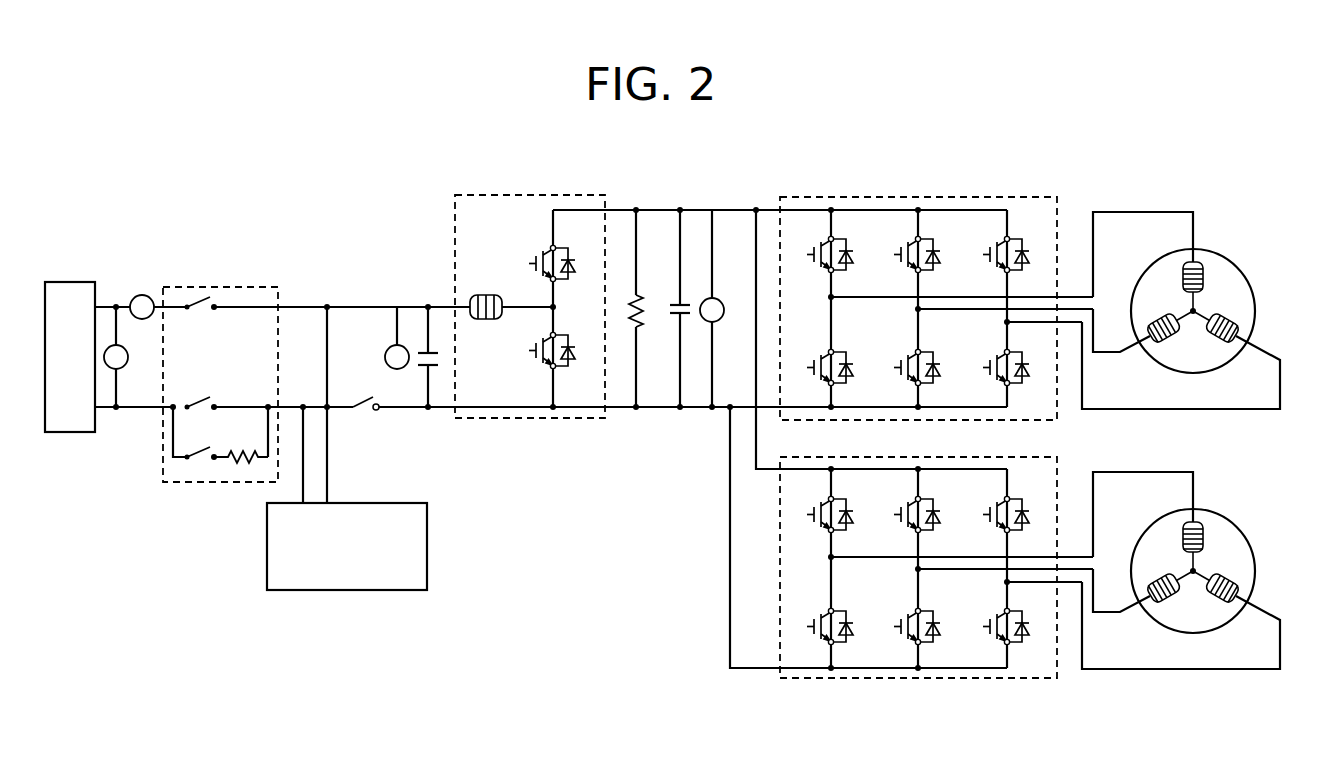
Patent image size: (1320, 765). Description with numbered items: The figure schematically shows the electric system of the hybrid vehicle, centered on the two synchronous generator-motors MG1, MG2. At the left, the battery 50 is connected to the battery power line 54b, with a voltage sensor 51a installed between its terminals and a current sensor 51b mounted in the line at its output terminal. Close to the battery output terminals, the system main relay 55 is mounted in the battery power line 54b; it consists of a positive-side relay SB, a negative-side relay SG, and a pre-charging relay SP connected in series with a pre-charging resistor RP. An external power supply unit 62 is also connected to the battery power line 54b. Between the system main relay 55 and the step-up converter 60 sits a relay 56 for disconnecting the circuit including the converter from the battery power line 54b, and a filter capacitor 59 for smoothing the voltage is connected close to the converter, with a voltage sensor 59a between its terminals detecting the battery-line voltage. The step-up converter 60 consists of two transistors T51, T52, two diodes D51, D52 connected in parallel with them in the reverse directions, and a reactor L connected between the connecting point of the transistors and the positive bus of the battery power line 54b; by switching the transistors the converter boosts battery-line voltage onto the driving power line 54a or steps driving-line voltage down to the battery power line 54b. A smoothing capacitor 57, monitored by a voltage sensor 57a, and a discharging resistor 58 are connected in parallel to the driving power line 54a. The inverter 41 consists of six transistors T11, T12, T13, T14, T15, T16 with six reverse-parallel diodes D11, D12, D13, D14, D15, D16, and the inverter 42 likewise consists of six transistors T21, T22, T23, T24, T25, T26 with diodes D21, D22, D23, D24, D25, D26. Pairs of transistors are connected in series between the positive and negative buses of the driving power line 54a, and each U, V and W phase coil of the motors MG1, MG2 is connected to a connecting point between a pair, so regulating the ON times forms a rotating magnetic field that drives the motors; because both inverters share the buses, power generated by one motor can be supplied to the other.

The battery 50 is at (72, 282).
The voltage sensor 51a is at (123, 368).
The current sensor 51b is at (142, 295).
The system main relay 55 is at (228, 287).
The positive-side relay SB is at (203, 300).
The negative-side relay SG is at (200, 401).
The pre-charging relay SP is at (205, 455).
The pre-charging resistor RP is at (243, 463).
The battery power line 54b is at (312, 407).
The relay 56 is at (364, 411).
The external power supply unit 62 is at (427, 546).
The filter capacitor 59 is at (427, 305).
The voltage sensor 59a is at (397, 344).
The step-up converter 60 is at (453, 220).
The reactor L is at (485, 292).
The transistor T51 is at (530, 262).
The diode D51 is at (579, 279).
The transistor T52 is at (530, 349).
The diode D52 is at (579, 366).
The driving power line 54a is at (743, 407).
The smoothing capacitor 57 is at (676, 303).
The voltage sensor 57a is at (710, 297).
The discharging resistor 58 is at (642, 322).
The inverter 41 is at (1057, 210).
The inverter 42 is at (1057, 470).
The transistor T11 is at (808, 253).
The transistor T12 is at (895, 253).
The transistor T13 is at (984, 253).
The transistor T14 is at (808, 366).
The transistor T15 is at (895, 366).
The transistor T16 is at (984, 366).
The diode D11 is at (858, 268).
The diode D12 is at (945, 268).
The diode D13 is at (1034, 268).
The diode D14 is at (858, 380).
The diode D15 is at (945, 380).
The diode D16 is at (1034, 380).
The transistor T21 is at (808, 513).
The transistor T22 is at (895, 513).
The transistor T23 is at (984, 513).
The transistor T24 is at (808, 626).
The transistor T25 is at (895, 626).
The transistor T26 is at (984, 626).
The diode D21 is at (858, 528).
The diode D22 is at (945, 528).
The diode D23 is at (1034, 528).
The diode D24 is at (858, 639).
The diode D25 is at (945, 639).
The diode D26 is at (1034, 639).
The motor MG1 is at (1223, 252).
The motor MG2 is at (1223, 512).